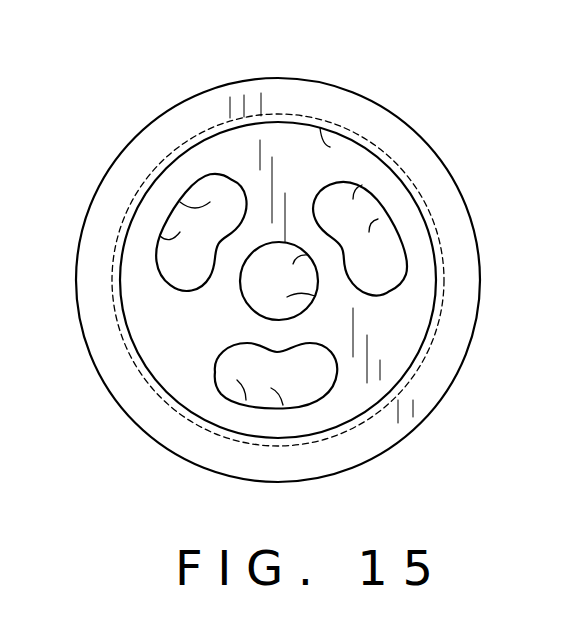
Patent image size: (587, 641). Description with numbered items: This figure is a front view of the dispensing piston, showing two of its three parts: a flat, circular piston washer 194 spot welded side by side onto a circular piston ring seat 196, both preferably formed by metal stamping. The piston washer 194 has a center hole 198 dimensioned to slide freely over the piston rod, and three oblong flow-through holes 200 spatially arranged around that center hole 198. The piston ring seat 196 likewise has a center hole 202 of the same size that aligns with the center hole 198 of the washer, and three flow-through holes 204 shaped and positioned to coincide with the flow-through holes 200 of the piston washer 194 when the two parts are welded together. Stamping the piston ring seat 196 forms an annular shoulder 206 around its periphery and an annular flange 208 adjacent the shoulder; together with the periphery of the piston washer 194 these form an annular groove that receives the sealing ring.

The piston washer 194 is at (397, 322).
The piston ring seat 196 is at (410, 303).
The center hole 198 is at (293, 264).
The flow-through holes 200 is at (237, 380).
The center hole 202 is at (287, 297).
The flow-through holes 204 is at (271, 388).
The annular shoulder 206 is at (330, 147).
The annular flange 208 is at (282, 98).